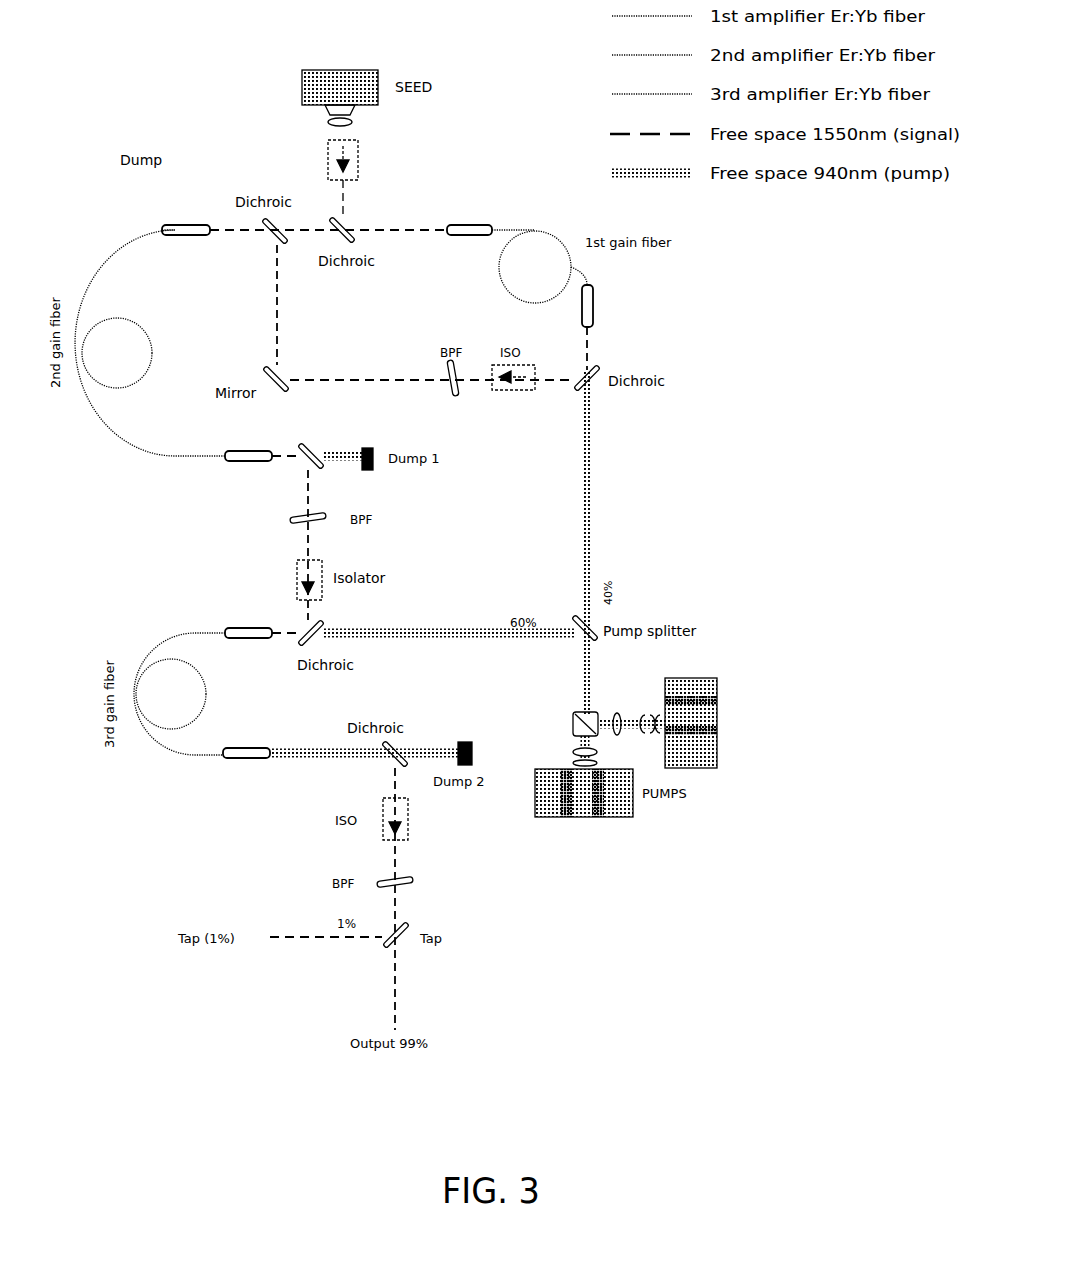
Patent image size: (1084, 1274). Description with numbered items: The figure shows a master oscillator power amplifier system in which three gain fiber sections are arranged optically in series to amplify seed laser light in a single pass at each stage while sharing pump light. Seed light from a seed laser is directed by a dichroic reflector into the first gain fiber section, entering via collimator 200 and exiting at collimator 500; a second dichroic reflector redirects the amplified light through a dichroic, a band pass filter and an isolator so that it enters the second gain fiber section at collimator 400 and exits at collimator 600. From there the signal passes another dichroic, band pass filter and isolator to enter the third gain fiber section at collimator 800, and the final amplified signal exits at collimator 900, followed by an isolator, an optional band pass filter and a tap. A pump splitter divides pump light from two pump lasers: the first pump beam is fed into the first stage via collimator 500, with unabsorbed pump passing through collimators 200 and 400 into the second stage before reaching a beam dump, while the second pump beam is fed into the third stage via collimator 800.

The collimator 200 is at (469, 215).
The collimator 400 is at (186, 215).
The collimator 500 is at (618, 306).
The collimator 600 is at (248, 471).
The collimator 800 is at (248, 621).
The collimator 900 is at (246, 742).